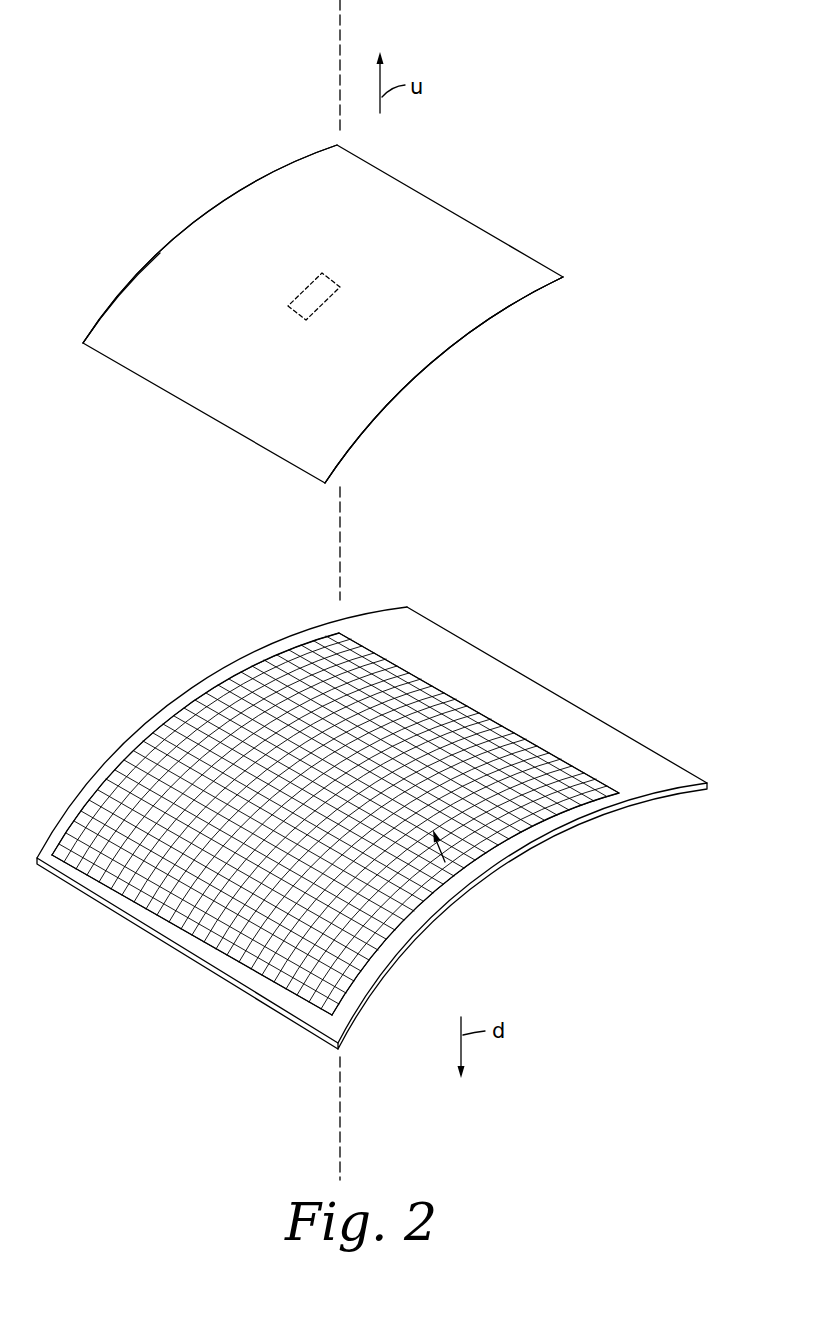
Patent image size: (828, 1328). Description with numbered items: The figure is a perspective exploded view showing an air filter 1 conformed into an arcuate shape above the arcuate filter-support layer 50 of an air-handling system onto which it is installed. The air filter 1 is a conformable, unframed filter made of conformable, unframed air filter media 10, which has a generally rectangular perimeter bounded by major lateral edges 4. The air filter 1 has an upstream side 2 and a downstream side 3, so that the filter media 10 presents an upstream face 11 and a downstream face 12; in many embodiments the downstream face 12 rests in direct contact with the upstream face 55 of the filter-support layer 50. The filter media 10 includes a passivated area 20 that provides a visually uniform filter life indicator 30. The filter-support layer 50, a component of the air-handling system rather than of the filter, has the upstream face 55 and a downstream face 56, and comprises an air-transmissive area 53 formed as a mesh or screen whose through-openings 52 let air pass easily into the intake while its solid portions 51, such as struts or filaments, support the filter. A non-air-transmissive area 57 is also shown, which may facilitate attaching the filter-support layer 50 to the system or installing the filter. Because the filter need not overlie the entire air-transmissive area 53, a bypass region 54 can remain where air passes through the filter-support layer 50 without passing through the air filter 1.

The air filter 1 is at (562, 60).
The upstream side 2 is at (200, 168).
The downstream side 3 is at (438, 381).
The major lateral edge 4 is at (120, 296).
The air filter media 10 is at (536, 258).
The upstream face 11 is at (291, 162).
The downstream face 12 is at (455, 300).
The passivated area 20 is at (296, 276).
The filter life indicator 30 is at (300, 292).
The filter-support layer 50 is at (618, 676).
The solid portions 51 is at (150, 928).
The through-openings 52 is at (255, 957).
The air-transmissive area 53 is at (293, 772).
The bypass region 54 is at (127, 781).
The upstream face 55 is at (114, 698).
The downstream face 56 is at (466, 887).
The non-air-transmissive area 57 is at (527, 693).